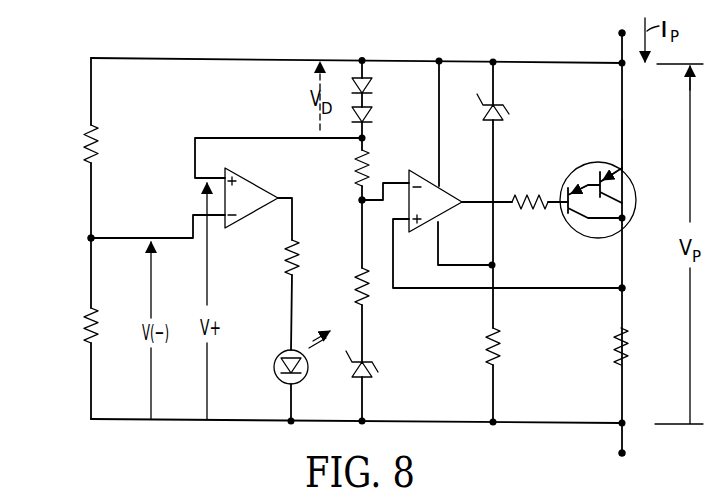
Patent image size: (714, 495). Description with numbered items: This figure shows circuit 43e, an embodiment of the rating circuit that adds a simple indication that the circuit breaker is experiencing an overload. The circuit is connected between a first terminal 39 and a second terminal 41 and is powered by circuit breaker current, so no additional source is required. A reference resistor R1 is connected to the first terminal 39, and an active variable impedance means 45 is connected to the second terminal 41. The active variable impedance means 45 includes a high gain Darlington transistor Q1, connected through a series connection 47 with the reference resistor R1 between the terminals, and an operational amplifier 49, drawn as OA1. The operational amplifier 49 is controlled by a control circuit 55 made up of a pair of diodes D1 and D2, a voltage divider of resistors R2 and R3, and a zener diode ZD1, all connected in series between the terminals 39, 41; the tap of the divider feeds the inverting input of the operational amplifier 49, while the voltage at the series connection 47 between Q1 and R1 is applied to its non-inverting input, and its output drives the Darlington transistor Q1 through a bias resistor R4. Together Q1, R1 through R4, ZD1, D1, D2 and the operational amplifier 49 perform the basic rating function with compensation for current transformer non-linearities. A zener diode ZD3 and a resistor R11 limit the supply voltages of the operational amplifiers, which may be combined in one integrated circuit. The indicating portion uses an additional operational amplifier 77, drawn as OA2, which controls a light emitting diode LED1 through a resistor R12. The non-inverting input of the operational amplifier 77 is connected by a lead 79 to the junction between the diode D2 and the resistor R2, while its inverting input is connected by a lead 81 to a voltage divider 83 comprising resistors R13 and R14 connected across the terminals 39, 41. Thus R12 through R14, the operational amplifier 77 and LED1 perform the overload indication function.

The circuit 43e is at (418, 43).
The second terminal 41 is at (620, 33).
The active variable impedance means 45 is at (633, 146).
The series connection 47 is at (633, 286).
The first terminal 39 is at (626, 455).
The operational amplifier 49 is at (442, 188).
The control circuit 55 is at (356, 201).
The lead 79 is at (225, 137).
The operational amplifier 77 is at (233, 174).
The lead 81 is at (186, 232).
The voltage divider 83 is at (73, 238).
The resistor R13 is at (82, 142).
The resistor R14 is at (82, 332).
The resistor R12 is at (282, 262).
The resistor R2 is at (355, 166).
The resistor R3 is at (370, 287).
The bias resistor R4 is at (525, 194).
The reference resistor R1 is at (628, 355).
The resistor R11 is at (500, 358).
The diode D1 is at (372, 86).
The diode D2 is at (373, 114).
The zener diode ZD1 is at (368, 374).
The zener diode ZD3 is at (501, 118).
The light emitting diode LED1 is at (273, 353).
The Darlington transistor Q1 is at (608, 238).
The operational amplifier OA1 is at (435, 201).
The operational amplifier OA2 is at (251, 198).